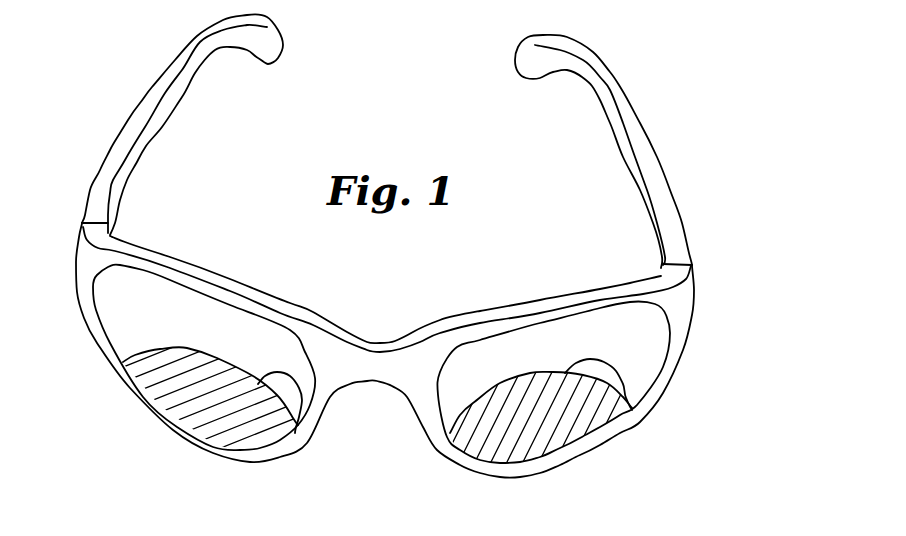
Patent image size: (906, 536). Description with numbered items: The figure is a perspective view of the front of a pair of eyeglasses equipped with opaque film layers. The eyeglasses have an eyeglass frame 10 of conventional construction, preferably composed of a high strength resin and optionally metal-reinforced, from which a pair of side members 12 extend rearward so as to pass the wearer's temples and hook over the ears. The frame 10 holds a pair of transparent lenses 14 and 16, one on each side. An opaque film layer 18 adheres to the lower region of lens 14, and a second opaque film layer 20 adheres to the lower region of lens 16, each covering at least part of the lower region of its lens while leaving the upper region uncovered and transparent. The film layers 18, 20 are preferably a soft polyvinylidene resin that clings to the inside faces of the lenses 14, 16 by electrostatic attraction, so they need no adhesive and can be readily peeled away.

The eyeglass frame 10 is at (712, 251).
The side members 12 is at (152, 137).
The transparent lens 14 is at (643, 337).
The transparent lens 16 is at (130, 313).
The opaque film layer 18 is at (632, 410).
The opaque film layer 20 is at (295, 433).